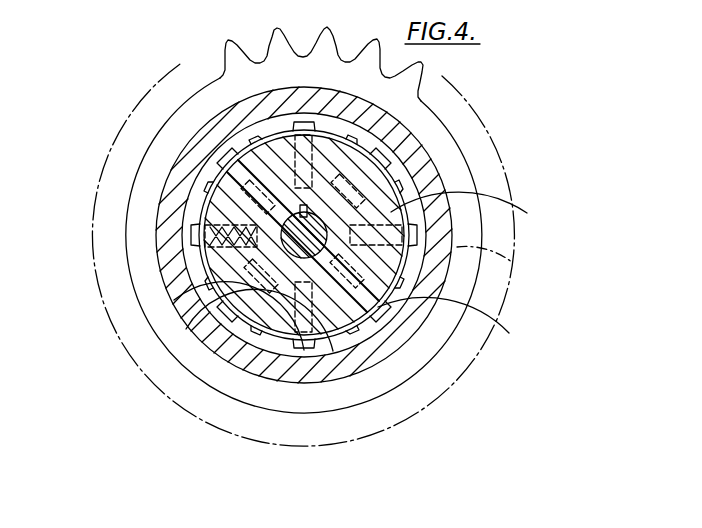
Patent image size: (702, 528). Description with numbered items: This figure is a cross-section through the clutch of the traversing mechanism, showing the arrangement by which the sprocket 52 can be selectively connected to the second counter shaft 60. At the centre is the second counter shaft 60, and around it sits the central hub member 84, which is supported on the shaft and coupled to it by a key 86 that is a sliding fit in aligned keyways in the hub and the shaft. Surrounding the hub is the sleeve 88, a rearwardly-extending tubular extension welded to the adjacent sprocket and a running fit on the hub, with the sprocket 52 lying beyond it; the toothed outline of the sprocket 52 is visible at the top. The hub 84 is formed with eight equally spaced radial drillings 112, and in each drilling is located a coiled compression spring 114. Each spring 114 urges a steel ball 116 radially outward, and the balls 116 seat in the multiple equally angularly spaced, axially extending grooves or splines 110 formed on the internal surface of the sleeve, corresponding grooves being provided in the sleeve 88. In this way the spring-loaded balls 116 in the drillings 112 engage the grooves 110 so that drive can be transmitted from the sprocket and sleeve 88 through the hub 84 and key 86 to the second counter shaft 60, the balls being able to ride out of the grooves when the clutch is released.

The fourth sprocket 52 is at (425, 78).
The sleeve 88 is at (489, 138).
The central hub member 84 is at (508, 195).
The radial drillings 112 is at (513, 264).
The steel ball 116 is at (497, 323).
The grooves or splines 110 is at (285, 452).
The coiled compression spring 114 is at (193, 233).
The second counter shaft 60 is at (285, 248).
The key 86 is at (300, 207).